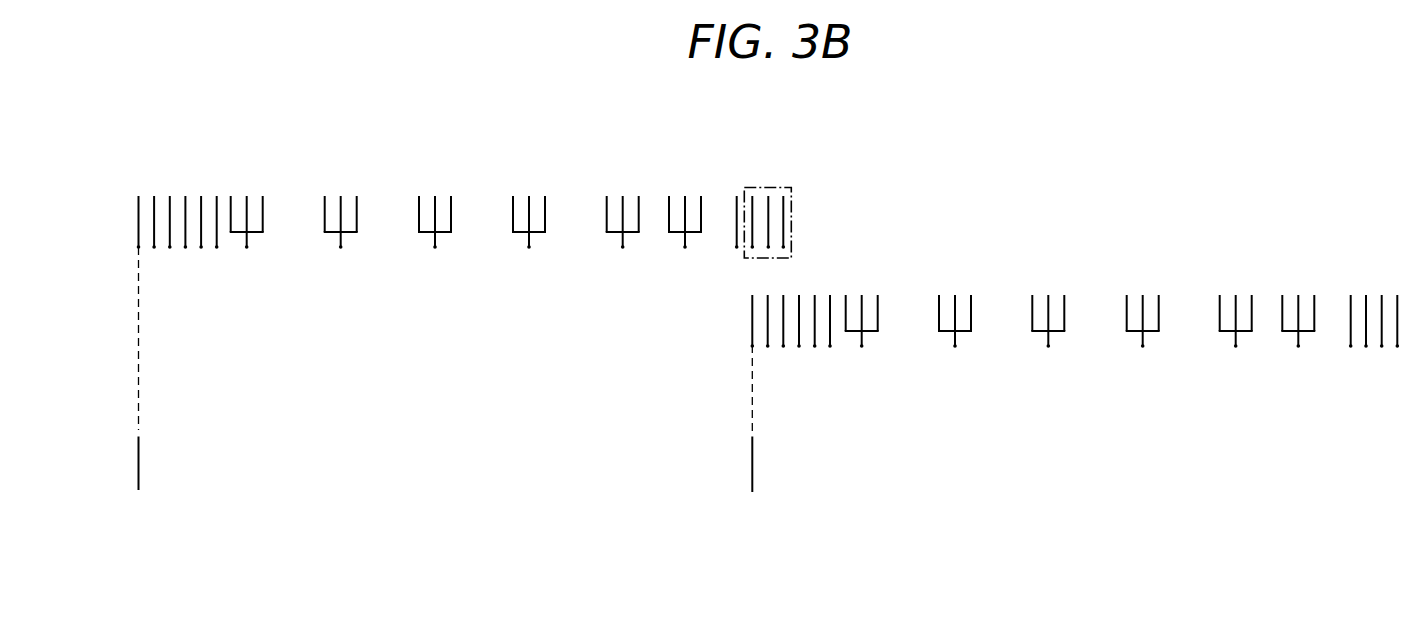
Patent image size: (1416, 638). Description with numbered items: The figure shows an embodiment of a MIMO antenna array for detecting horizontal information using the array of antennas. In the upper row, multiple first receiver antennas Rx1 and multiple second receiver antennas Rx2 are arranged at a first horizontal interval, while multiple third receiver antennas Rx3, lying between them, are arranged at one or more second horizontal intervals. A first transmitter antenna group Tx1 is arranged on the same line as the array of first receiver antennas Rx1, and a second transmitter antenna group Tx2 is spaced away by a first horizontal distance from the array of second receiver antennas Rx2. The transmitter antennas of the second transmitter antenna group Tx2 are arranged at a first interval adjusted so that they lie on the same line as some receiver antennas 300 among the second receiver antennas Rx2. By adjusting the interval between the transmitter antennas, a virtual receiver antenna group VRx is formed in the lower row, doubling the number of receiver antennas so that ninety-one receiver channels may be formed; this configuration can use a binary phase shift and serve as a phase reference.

The receiver antennas 300 is at (803, 204).
The first receiver antennas Rx1 is at (218, 183).
The second receiver antennas Rx2 is at (784, 183).
The third receiver antennas Rx3 is at (700, 183).
The virtual receiver antenna group VRx is at (1397, 283).
The first transmitter antenna group Tx1 is at (147, 438).
The second transmitter antenna group Tx2 is at (762, 438).